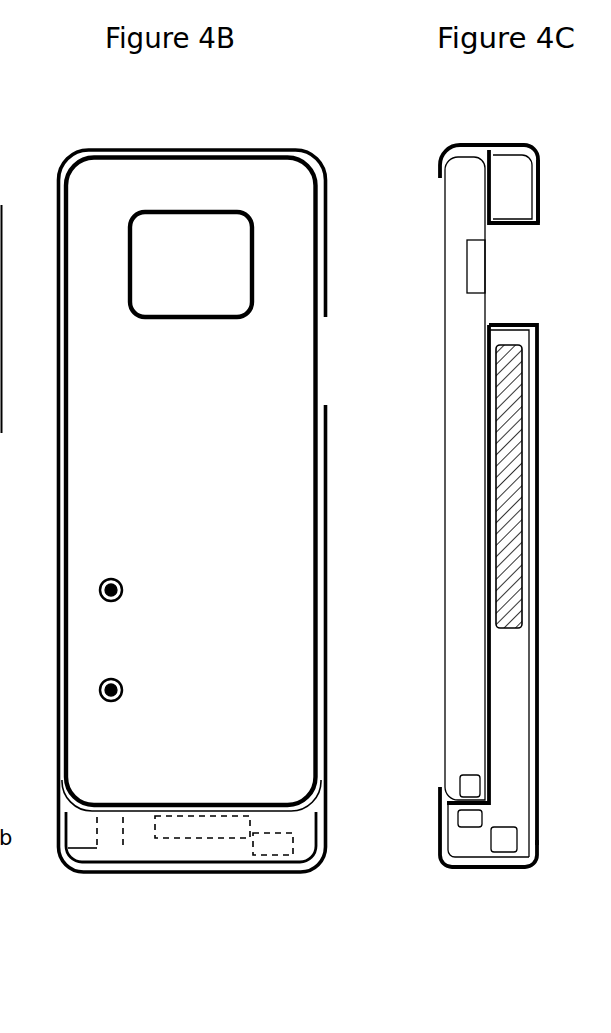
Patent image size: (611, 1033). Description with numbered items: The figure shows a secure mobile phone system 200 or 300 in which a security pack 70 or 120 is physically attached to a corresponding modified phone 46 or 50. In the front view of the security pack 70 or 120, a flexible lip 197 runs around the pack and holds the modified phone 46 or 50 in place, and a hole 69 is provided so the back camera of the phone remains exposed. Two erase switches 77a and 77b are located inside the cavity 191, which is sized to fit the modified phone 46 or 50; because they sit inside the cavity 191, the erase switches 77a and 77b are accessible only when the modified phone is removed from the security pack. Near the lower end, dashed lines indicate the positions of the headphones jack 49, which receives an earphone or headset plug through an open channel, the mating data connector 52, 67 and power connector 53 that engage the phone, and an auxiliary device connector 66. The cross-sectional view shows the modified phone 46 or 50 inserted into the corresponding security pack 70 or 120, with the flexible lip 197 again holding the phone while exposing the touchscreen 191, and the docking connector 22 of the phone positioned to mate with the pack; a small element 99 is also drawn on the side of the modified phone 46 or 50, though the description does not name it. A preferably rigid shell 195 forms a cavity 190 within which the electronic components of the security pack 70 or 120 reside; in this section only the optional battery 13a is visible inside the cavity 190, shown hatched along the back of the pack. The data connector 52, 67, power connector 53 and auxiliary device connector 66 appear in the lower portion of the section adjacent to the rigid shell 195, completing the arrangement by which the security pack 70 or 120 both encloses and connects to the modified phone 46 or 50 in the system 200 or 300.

In FIG. 4B, the security pack 70 is at (180, 492).
In FIG. 4C, the security pack 70 is at (460, 168).
In FIG. 4B, the security pack 120 is at (100, 149).
In FIG. 4C, the security pack 120 is at (450, 146).
In FIG. 4B, the hole 69 is at (128, 226).
In FIG. 4C, the hole 69 is at (520, 225).
In FIG. 4B, the cavity 191 is at (230, 468).
In FIG. 4C, the cavity 191 is at (449, 213).
In FIG. 4B, the flexible lip 197 is at (315, 603).
In FIG. 4C, the flexible lip 197 is at (440, 803).
In FIG. 4B, the erase switch 77a is at (111, 578).
In FIG. 4B, the erase switch 77b is at (111, 702).
In FIG. 4B, the mating data connector 52 is at (224, 805).
In FIG. 4C, the mating data connector 52 is at (437, 878).
In FIG. 4B, the power connector 53 is at (224, 805).
In FIG. 4C, the power connector 53 is at (437, 878).
In FIG. 4B, the mating data connector 67 is at (187, 816).
In FIG. 4C, the mating data connector 67 is at (472, 815).
In FIG. 4B, the headphones jack 49 is at (72, 853).
In FIG. 4B, the auxiliary device connector 66 is at (300, 868).
In FIG. 4C, the auxiliary device connector 66 is at (508, 842).
In FIG. 4C, the secure mobile phone system 200 is at (355, 103).
In FIG. 4C, the secure mobile phone system 300 is at (370, 130).
In FIG. 4C, the modified phone 46 is at (421, 478).
In FIG. 4C, the modified phone 50 is at (421, 478).
In FIG. 4C, the side button 99 is at (467, 282).
In FIG. 4C, the optional battery 13a is at (522, 365).
In FIG. 4C, the cavity 190 is at (520, 670).
In FIG. 4C, the docking connector 22 is at (460, 780).
In FIG. 4C, the rigid shell 195 is at (447, 840).